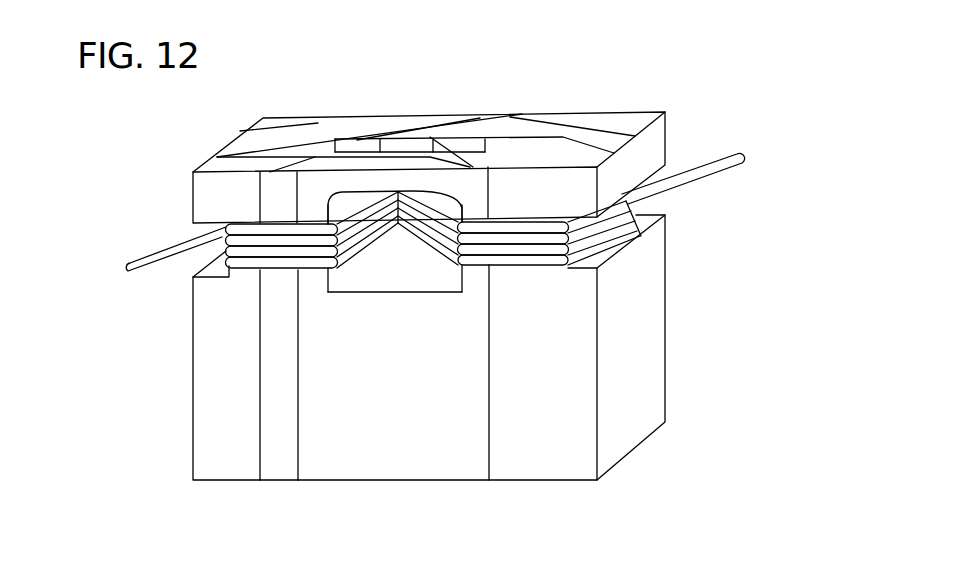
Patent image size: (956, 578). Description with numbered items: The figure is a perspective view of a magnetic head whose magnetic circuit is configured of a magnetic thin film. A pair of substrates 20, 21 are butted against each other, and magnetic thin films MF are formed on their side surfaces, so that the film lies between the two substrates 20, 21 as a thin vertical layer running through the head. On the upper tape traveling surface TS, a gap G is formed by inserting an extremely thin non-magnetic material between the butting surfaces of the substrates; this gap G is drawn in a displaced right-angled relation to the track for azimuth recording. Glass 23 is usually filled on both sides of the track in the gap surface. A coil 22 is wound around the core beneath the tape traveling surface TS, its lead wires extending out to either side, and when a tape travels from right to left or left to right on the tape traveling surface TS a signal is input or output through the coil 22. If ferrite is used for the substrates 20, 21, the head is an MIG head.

The substrate 20 is at (528, 467).
The substrate 21 is at (218, 470).
The coil 22 is at (143, 266).
The glass 23 is at (388, 470).
The gap G is at (428, 126).
The magnetic thin film MF is at (280, 470).
The tape traveling surface TS is at (318, 132).